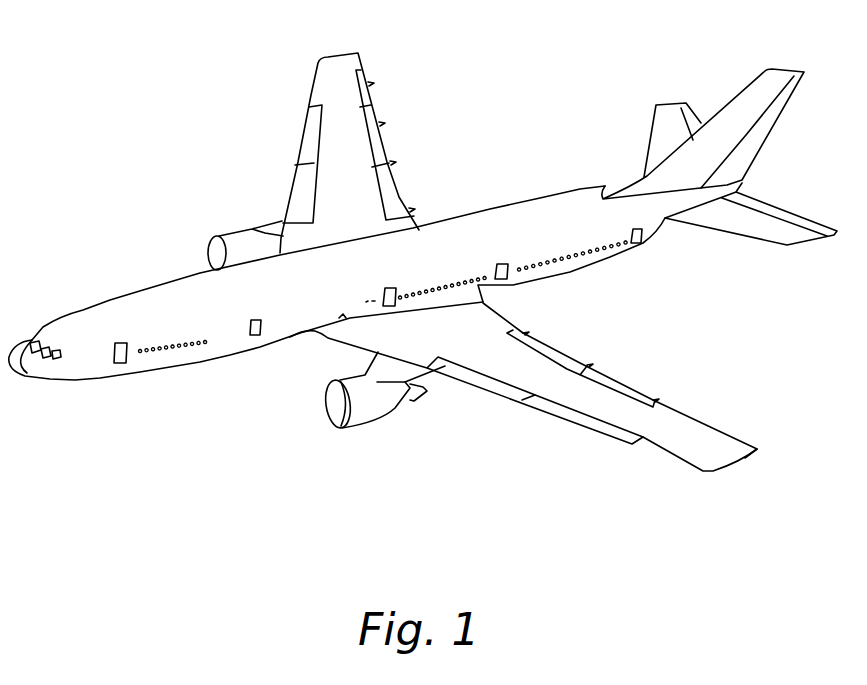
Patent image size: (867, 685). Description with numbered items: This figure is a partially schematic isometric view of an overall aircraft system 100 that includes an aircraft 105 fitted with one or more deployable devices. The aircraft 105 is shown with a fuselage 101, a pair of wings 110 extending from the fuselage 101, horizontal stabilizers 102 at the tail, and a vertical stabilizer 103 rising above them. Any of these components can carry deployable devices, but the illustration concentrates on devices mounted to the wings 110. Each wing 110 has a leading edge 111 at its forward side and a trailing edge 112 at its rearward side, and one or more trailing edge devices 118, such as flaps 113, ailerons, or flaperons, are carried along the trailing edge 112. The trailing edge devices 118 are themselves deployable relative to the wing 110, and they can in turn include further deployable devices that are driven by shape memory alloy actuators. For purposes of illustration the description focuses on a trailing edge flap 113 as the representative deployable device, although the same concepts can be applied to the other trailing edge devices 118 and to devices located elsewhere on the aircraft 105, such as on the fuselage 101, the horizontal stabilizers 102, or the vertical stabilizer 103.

The aircraft system 100 is at (672, 333).
The fuselage 101 is at (143, 290).
The horizontal stabilizers 102 is at (665, 118).
The vertical stabilizer 103 is at (740, 88).
The aircraft 105 is at (200, 413).
The wings 110 is at (345, 62).
The leading edge 111 is at (668, 460).
The trailing edge 112 is at (758, 450).
The flap 113 is at (548, 352).
The trailing edge devices 118 is at (418, 147).